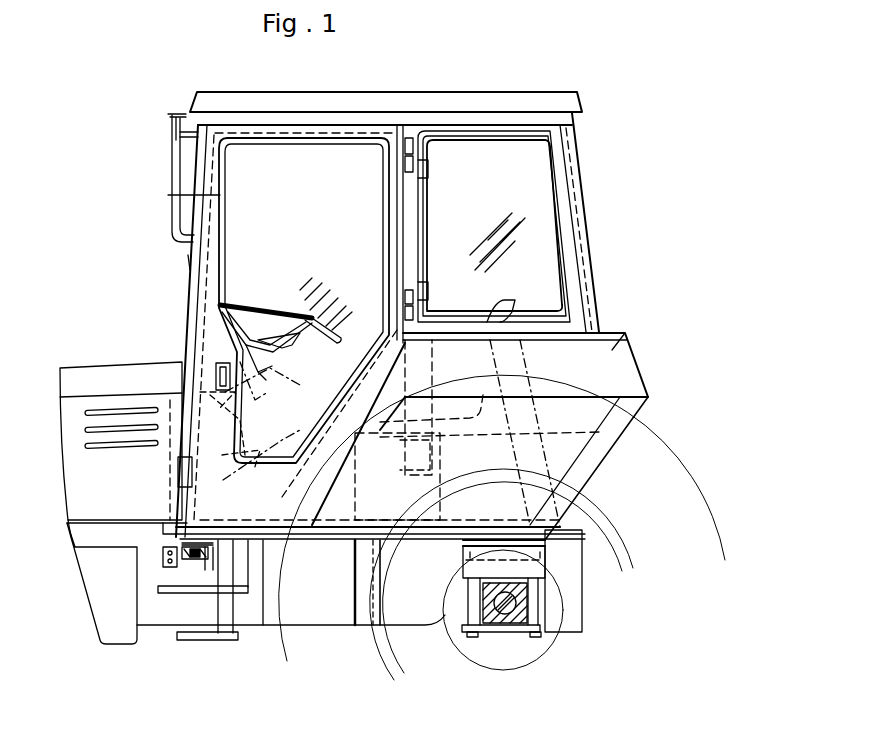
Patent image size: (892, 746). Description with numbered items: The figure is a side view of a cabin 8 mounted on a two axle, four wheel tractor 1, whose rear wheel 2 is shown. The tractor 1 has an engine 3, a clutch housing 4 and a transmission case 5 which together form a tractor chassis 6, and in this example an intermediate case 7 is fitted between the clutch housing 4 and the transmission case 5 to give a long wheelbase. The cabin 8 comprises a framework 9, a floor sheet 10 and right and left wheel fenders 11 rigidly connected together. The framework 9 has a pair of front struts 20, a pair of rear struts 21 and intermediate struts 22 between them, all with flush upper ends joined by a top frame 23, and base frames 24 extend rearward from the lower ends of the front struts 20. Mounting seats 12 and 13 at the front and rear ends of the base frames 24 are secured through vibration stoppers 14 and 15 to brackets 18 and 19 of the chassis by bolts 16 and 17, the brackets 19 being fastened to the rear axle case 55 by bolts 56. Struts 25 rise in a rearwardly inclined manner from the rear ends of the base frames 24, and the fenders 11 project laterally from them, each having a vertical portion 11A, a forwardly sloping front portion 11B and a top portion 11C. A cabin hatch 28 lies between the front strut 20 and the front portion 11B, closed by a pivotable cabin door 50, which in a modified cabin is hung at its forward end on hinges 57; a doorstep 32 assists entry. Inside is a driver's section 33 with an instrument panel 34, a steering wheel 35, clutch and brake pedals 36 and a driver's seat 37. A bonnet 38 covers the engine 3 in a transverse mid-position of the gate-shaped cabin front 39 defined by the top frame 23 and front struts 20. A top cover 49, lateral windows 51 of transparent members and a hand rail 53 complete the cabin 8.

The tractor 1 is at (103, 348).
The rear wheel 2 is at (662, 442).
The engine 3 is at (113, 644).
The clutch housing 4 is at (265, 627).
The transmission case 5 is at (425, 620).
The tractor chassis 6 is at (321, 628).
The intermediate case 7 is at (366, 620).
The cabin 8 is at (580, 158).
The framework 9 is at (192, 162).
The floor sheet 10 is at (445, 438).
The wheel fenders 11 is at (636, 358).
The vertical portion 11A is at (585, 470).
The front portion 11B is at (308, 515).
The top portion 11C is at (628, 333).
The mounting seats 12 is at (140, 545).
The mounting seats 13 is at (540, 522).
The vibration stoppers 14 is at (192, 560).
The vibration stopper 15 is at (548, 545).
The bolts 16 is at (194, 560).
The bolt 17 is at (570, 566).
The brackets 18 is at (165, 567).
The brackets 19 is at (545, 597).
The front struts 20 is at (192, 328).
The rear struts 21 is at (590, 262).
The intermediate struts 22 is at (406, 248).
The top frame 23 is at (416, 120).
The base frames 24 is at (338, 534).
The struts 25 is at (560, 445).
The cabin hatch 28 is at (252, 550).
The doorstep 32 is at (226, 641).
The driver's section 33 is at (300, 290).
The instrument panel 34 is at (240, 365).
The steering wheel 35 is at (315, 330).
The clutch and brake pedals 36 is at (250, 463).
The driver's seat 37 is at (505, 300).
The bonnet 38 is at (74, 368).
The cabin front 39 is at (190, 262).
The top cover 49 is at (545, 104).
The cabin door 50 is at (192, 195).
The lateral windows 51 is at (540, 212).
The hand rail 53 is at (176, 130).
The rear axle case 55 is at (503, 625).
The bolts 56 is at (463, 635).
The hinges 57 is at (410, 153).